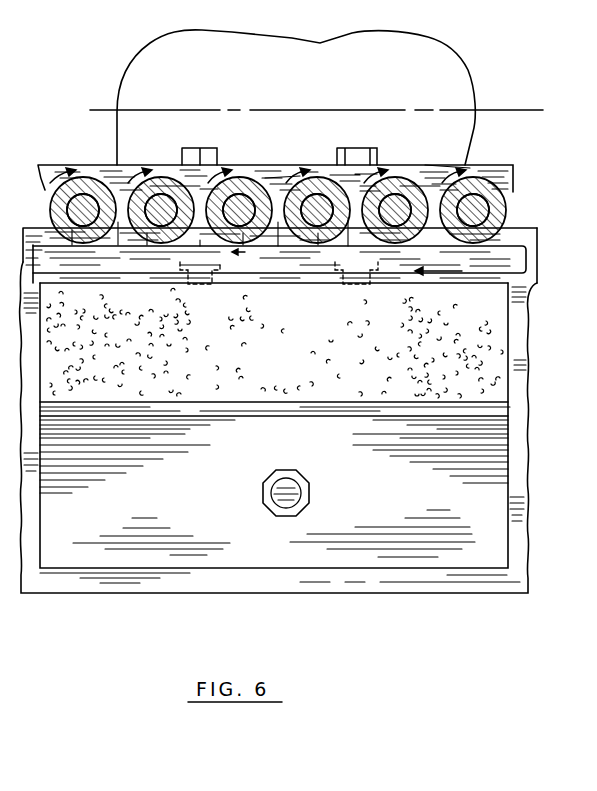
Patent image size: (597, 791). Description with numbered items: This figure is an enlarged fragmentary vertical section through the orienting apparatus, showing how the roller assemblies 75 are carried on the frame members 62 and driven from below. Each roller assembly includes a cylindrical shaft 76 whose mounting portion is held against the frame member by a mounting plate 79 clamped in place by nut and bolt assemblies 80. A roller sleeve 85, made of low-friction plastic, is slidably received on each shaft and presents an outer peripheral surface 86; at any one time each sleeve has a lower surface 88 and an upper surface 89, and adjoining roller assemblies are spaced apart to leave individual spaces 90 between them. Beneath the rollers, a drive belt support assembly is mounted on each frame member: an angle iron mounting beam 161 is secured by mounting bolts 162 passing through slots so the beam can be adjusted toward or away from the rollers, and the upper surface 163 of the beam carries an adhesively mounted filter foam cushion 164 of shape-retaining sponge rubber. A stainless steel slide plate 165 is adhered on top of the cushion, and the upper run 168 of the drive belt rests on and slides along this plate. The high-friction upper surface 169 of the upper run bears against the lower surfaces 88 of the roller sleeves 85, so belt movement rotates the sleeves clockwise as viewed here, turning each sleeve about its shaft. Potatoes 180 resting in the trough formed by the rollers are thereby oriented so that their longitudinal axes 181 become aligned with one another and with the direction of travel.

The frame member 62 is at (43, 235).
The roller assembly 75 is at (268, 178).
The cylindrical shaft 76 is at (83, 197).
The mounting plate 79 is at (427, 165).
The nut and bolt assembly 80 is at (200, 148).
The roller sleeve 85 is at (69, 188).
The outer peripheral surface 86 is at (160, 183).
The lower surface 88 is at (72, 230).
The upper surface 89 is at (156, 186).
The individual space 90 is at (118, 222).
The angle iron mounting beam 161 is at (473, 495).
The mounting bolt 162 is at (267, 480).
The upper surface 163 is at (463, 398).
The filter foam cushion 164 is at (297, 361).
The slide plate 165 is at (456, 276).
The upper run 168 is at (527, 305).
The upper surface 169 is at (523, 227).
The potato 180 is at (452, 47).
The longitudinal axis 181 is at (490, 110).